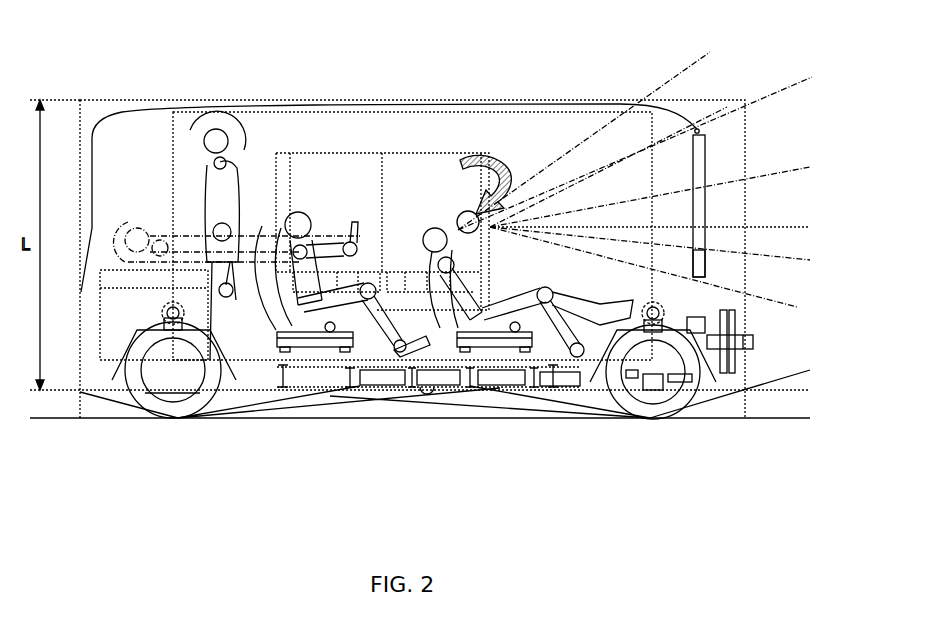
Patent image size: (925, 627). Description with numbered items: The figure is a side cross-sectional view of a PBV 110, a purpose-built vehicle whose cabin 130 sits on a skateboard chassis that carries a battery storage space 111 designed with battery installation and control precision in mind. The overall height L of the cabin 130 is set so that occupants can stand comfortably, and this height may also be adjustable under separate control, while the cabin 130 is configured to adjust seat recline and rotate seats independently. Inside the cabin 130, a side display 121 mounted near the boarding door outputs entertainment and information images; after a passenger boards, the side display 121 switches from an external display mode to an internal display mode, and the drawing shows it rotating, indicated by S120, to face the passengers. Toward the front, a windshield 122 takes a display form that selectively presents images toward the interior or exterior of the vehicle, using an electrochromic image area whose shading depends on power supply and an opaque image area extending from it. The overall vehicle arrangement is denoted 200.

The vehicle 200 is at (570, 37).
The side display 121 is at (432, 162).
The rotation of the side display S120 is at (498, 180).
The windshield 122 is at (705, 165).
The cabin 130 is at (330, 338).
The battery storage space 111 is at (455, 376).
The PBV 110 is at (568, 386).